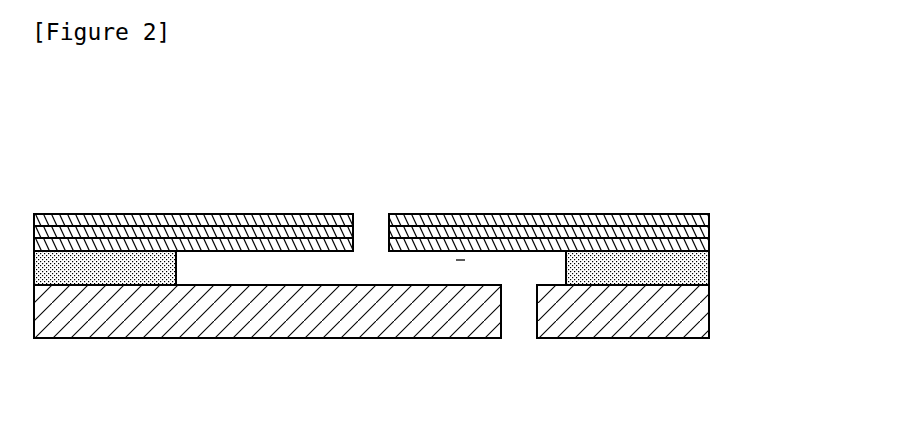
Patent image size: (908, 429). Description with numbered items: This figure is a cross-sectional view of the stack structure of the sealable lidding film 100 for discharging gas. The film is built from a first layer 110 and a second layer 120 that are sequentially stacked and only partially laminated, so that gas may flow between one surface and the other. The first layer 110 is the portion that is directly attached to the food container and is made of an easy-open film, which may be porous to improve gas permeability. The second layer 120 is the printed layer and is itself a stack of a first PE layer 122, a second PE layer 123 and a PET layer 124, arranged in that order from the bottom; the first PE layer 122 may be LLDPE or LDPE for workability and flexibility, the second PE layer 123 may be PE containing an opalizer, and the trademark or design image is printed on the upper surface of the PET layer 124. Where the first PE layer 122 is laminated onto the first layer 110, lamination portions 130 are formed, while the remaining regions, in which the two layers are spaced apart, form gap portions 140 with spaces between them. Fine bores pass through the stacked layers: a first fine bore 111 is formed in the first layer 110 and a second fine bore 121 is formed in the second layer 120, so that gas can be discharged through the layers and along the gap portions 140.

The sealable lidding film for discharging gas 100 is at (103, 97).
The first layer 110 is at (698, 318).
The first fine bore 111 is at (520, 322).
The second layer 120 is at (774, 195).
The second fine bore 121 is at (373, 233).
The first PE layer 122 is at (705, 253).
The second PE layer 123 is at (705, 232).
The PET layer 124 is at (708, 218).
The lamination portion 130 is at (697, 272).
The gap portion 140 is at (460, 260).